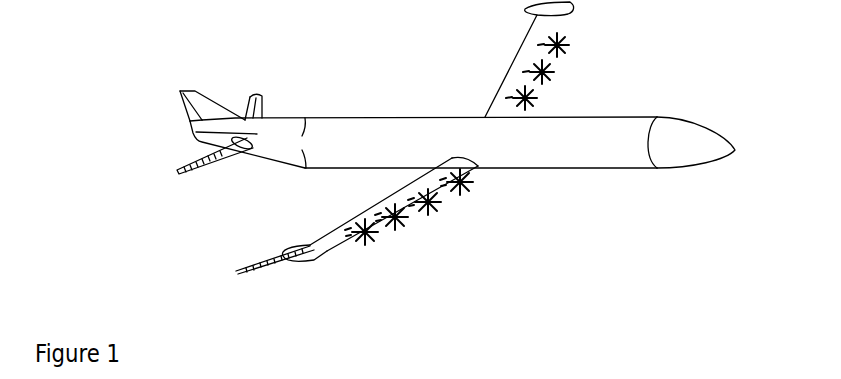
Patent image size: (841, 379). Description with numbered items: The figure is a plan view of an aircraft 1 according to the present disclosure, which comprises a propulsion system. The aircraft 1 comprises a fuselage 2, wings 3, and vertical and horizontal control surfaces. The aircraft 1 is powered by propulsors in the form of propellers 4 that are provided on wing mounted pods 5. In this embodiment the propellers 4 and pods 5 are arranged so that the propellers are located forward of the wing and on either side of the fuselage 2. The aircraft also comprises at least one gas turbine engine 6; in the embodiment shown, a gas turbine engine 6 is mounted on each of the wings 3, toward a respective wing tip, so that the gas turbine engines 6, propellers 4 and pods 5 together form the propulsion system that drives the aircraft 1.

The aircraft 1 is at (456, 166).
The fuselage 2 is at (563, 153).
The wings 3 is at (405, 186).
The propellers 4 is at (559, 70).
The wing mounted pods 5 is at (418, 206).
The gas turbine engine 6 is at (523, 6).